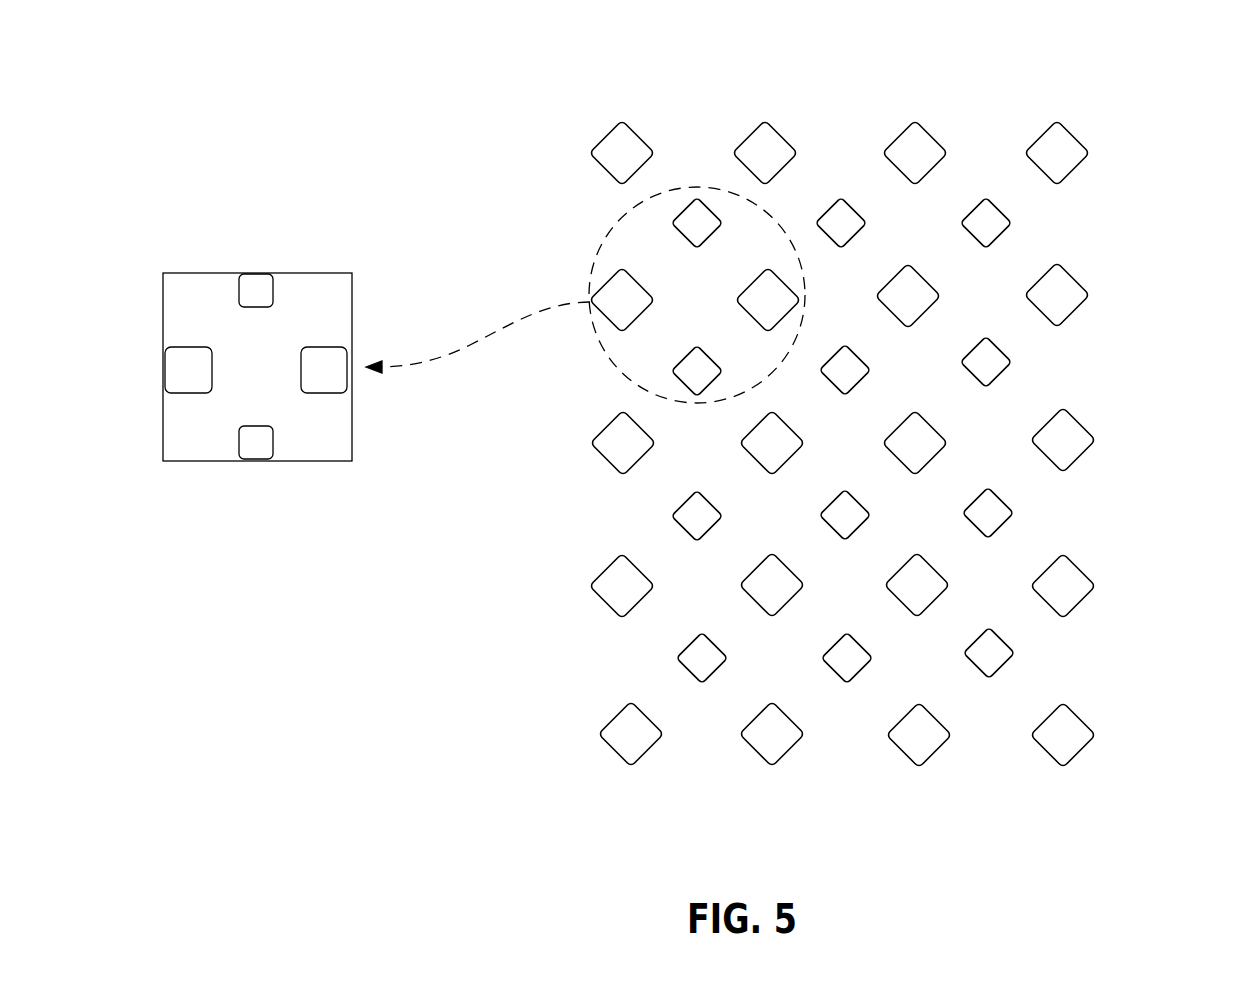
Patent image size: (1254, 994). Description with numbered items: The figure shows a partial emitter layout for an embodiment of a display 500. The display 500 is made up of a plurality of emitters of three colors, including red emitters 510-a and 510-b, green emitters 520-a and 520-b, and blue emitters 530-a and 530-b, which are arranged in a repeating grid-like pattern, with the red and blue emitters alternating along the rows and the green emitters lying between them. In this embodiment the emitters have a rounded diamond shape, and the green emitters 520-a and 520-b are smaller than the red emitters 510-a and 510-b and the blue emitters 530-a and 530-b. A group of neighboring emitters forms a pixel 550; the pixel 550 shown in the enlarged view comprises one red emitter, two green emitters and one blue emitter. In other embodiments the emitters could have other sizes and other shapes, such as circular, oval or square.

The display 500 is at (790, 98).
The red emitter 510-a is at (1077, 276).
The red emitter 510-b is at (640, 760).
The green emitter 520-a is at (1010, 362).
The green emitter 520-b is at (987, 680).
The blue emitter 530-a is at (1079, 421).
The blue emitter 530-b is at (787, 755).
The pixel 550 is at (297, 461).